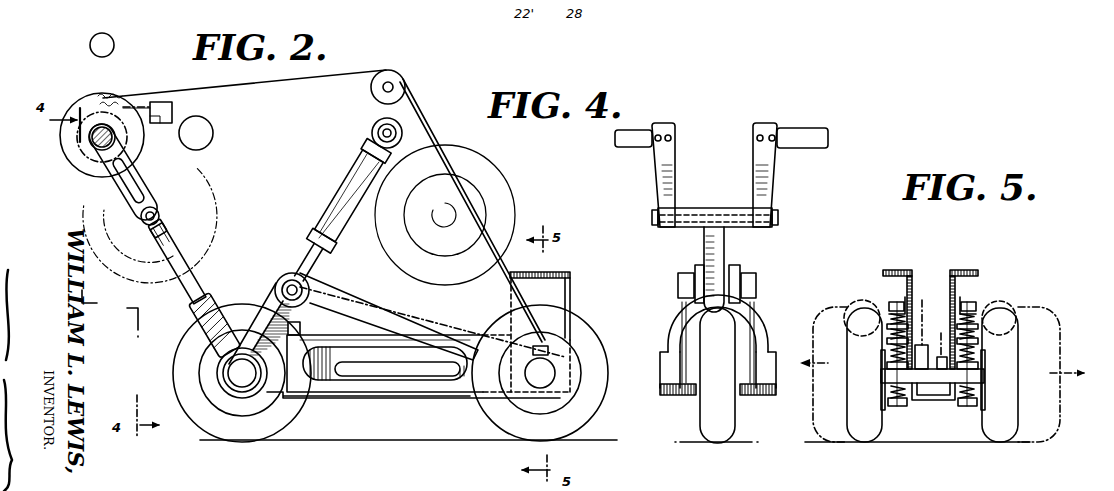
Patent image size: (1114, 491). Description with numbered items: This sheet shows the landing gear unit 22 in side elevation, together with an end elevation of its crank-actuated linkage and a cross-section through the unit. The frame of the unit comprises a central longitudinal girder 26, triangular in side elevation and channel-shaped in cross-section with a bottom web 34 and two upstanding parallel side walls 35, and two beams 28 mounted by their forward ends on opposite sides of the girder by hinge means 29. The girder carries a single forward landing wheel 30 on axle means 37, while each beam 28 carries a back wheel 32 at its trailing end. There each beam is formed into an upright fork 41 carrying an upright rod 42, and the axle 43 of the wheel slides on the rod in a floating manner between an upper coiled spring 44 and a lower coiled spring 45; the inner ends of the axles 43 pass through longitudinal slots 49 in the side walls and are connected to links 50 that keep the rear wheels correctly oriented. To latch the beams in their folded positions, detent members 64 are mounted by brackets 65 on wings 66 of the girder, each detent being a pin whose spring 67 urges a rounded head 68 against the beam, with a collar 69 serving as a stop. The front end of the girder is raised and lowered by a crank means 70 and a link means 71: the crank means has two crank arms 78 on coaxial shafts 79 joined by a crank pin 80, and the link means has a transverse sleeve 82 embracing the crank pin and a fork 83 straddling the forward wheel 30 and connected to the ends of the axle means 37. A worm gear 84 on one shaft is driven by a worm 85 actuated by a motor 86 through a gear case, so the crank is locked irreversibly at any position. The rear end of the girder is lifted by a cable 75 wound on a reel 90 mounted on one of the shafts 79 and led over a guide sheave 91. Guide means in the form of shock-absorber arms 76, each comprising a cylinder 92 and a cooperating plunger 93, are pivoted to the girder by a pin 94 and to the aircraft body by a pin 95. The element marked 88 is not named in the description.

In FIG. 2, the landing gear unit 22 is at (477, 318).
In FIG. 4, the landing gear unit 22 is at (780, 118).
In FIG. 5, the landing gear unit 22 is at (982, 262).
In FIG. 2, the girder 26 is at (378, 298).
In FIG. 5, the girder 26 is at (911, 268).
In FIG. 2, the beams 28 is at (378, 400).
In FIG. 5, the beams 28 is at (884, 372).
In FIG. 2, the hinge means 29 is at (304, 330).
In FIG. 2, the forward landing wheel 30 is at (281, 441).
In FIG. 4, the forward landing wheel 30 is at (702, 415).
In FIG. 2, the back wheel 32 is at (587, 406).
In FIG. 5, the back wheel 32 is at (858, 416).
In FIG. 2, the bottom web 34 is at (445, 400).
In FIG. 5, the bottom web 34 is at (935, 400).
In FIG. 2, the side walls 35 is at (366, 330).
In FIG. 5, the side walls 35 is at (992, 268).
In FIG. 2, the axle means 37 is at (240, 384).
In FIG. 4, the axle means 37 is at (772, 386).
In FIG. 5, the upright fork 41 is at (965, 408).
In FIG. 5, the upright rod 42 is at (888, 345).
In FIG. 5, the axle 43 is at (880, 378).
In FIG. 5, the upper coiled spring 44 is at (990, 345).
In FIG. 5, the lower coiled spring 45 is at (978, 398).
In FIG. 2, the longitudinal slots 49 is at (425, 378).
In FIG. 5, the longitudinal slots 49 is at (897, 408).
In FIG. 5, the links 50 is at (925, 360).
In FIG. 5, the detent members 64 is at (893, 303).
In FIG. 5, the brackets 65 is at (887, 318).
In FIG. 2, the wings 66 is at (567, 272).
In FIG. 5, the wings 66 is at (893, 270).
In FIG. 5, the spring 67 is at (866, 312).
In FIG. 5, the rounded head 68 is at (862, 320).
In FIG. 5, the collar 69 is at (890, 306).
In FIG. 2, the crank means 70 is at (115, 192).
In FIG. 4, the crank means 70 is at (777, 182).
In FIG. 2, the link means 71 is at (203, 278).
In FIG. 4, the link means 71 is at (724, 255).
In FIG. 2, the cable 75 is at (418, 96).
In FIG. 2, the shock-absorber arms 76 is at (338, 197).
In FIG. 2, the crank arms 78 is at (142, 190).
In FIG. 4, the crank arms 78 is at (658, 168).
In FIG. 2, the coaxial shafts 79 is at (92, 134).
In FIG. 4, the coaxial shafts 79 is at (816, 127).
In FIG. 2, the crank pin 80 is at (160, 216).
In FIG. 4, the crank pin 80 is at (779, 215).
In FIG. 4, the transverse sleeve 82 is at (695, 207).
In FIG. 2, the fork 83 is at (160, 99).
In FIG. 4, the fork 83 is at (764, 322).
In FIG. 2, the worm gear 84 is at (83, 156).
In FIG. 2, the worm 85 is at (113, 97).
In FIG. 2, the motor 86 is at (174, 114).
In FIG. 2, the link end 88 is at (216, 302).
In FIG. 2, the reel 90 is at (88, 96).
In FIG. 2, the guide sheave 91 is at (396, 72).
In FIG. 2, the cylinder 92 is at (360, 160).
In FIG. 2, the plunger 93 is at (315, 228).
In FIG. 2, the pin 94 is at (289, 272).
In FIG. 4, the pin 94 is at (678, 285).
In FIG. 2, the pin 95 is at (377, 127).